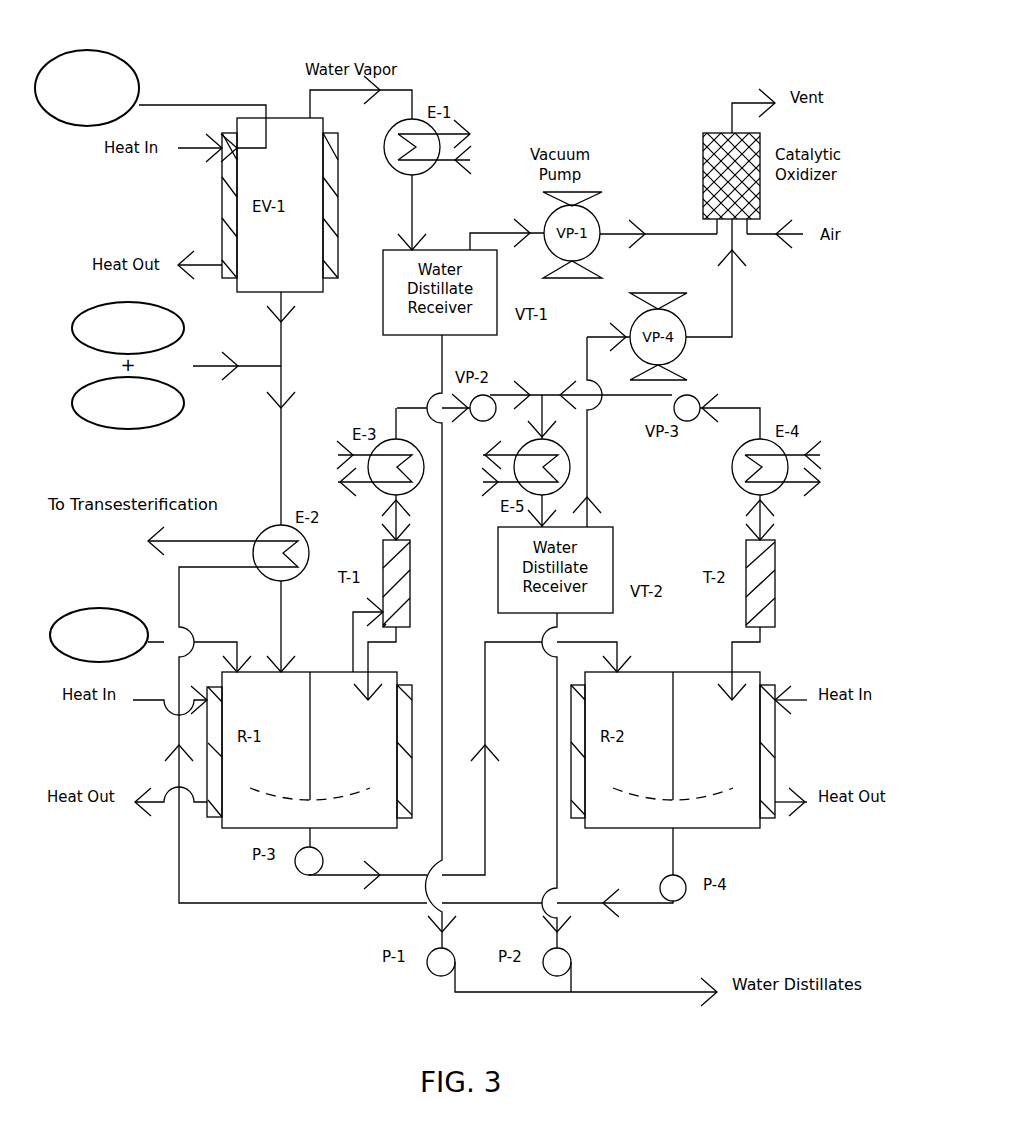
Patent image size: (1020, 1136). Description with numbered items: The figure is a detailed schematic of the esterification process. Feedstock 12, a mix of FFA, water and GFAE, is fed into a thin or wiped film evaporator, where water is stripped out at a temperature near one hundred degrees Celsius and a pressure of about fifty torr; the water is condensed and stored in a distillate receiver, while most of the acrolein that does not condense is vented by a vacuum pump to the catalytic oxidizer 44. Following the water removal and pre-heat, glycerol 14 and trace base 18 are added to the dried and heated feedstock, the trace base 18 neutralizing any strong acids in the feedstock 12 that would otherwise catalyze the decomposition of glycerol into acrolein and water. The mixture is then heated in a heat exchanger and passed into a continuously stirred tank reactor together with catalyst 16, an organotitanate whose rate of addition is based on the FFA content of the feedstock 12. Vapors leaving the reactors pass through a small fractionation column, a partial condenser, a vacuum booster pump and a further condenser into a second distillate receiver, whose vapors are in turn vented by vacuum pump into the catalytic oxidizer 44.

The feedstock 12 is at (68, 48).
The glycerol 14 is at (93, 303).
The trace base 18 is at (82, 388).
The catalyst 16 is at (93, 607).
The catalytic oxidizer 44 is at (702, 170).